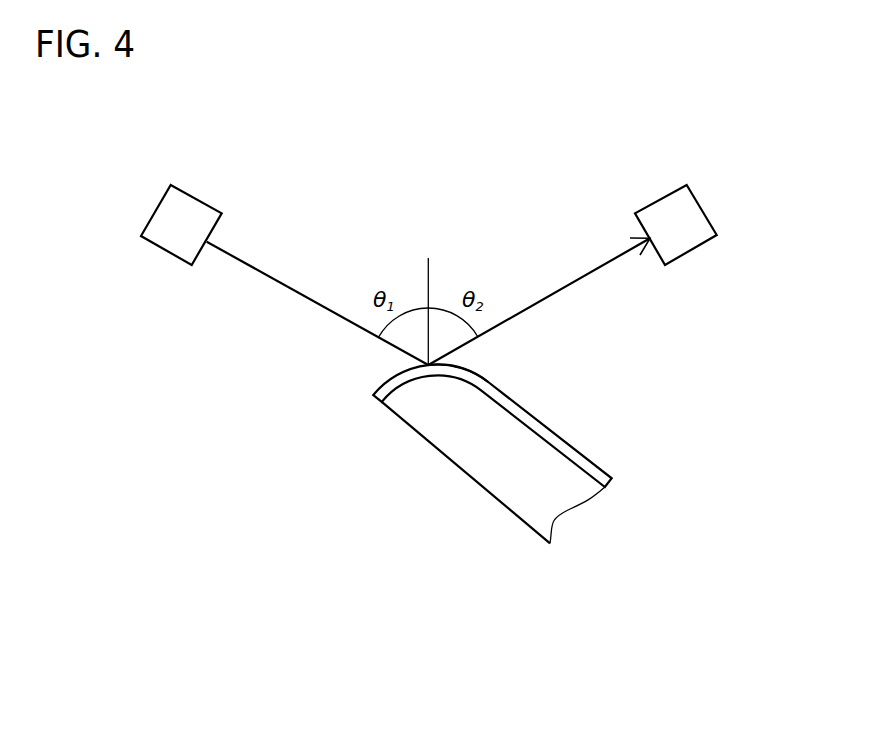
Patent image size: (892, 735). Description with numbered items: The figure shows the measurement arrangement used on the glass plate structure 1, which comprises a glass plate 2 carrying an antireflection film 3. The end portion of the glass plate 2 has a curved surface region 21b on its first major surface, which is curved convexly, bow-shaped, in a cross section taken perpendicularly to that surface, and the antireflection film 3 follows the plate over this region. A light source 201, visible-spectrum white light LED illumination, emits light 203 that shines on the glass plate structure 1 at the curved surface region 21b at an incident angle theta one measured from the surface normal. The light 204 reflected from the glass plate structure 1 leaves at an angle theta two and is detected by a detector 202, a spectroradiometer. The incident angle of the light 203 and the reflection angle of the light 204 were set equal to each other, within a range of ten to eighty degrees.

The glass plate structure 1 is at (523, 445).
The glass plate 2 is at (560, 502).
The antireflection film 3 is at (538, 427).
The curved surface region 21b is at (462, 372).
The light source 201 is at (153, 215).
The detector 202 is at (705, 207).
The light 203 is at (277, 277).
The light 204 is at (580, 275).